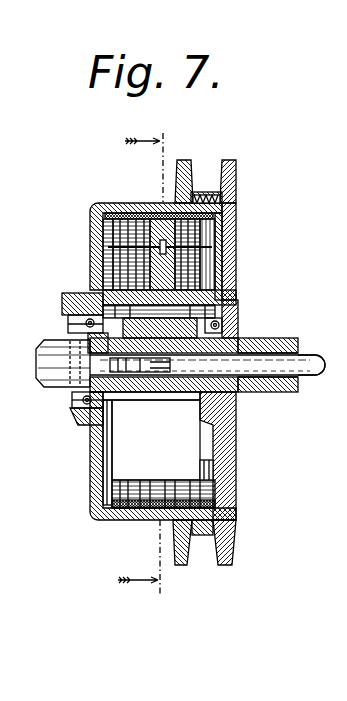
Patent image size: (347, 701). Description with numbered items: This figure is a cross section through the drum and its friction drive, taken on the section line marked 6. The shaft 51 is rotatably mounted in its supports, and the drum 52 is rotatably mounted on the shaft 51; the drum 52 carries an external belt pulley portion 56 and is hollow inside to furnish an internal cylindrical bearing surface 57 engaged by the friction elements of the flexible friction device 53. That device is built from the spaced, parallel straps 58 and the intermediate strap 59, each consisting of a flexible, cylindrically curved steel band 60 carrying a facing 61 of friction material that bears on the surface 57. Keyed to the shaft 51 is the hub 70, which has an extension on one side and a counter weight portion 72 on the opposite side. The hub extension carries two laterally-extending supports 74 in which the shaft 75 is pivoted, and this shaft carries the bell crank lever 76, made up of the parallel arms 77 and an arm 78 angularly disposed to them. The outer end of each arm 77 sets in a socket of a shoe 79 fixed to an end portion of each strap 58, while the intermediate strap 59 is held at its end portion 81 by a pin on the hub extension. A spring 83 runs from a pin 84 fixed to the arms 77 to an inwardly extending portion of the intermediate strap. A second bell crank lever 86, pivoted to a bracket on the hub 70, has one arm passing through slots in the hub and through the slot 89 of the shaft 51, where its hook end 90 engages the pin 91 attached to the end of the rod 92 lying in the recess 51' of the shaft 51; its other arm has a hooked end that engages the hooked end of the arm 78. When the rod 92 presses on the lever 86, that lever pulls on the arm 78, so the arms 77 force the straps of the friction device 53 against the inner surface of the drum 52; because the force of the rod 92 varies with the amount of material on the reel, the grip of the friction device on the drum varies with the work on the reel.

The section line 6- 6 is at (143, 367).
The shaft 51 is at (175, 381).
The recess 51' is at (292, 349).
The drum 52 is at (107, 523).
The flexible friction device 53 is at (152, 553).
The belt pulley portion 56 is at (201, 192).
The internal cylindrical bearing surface 57 is at (158, 212).
The straps 58 is at (140, 470).
The intermediate strap 59 is at (232, 472).
The steel bands 60 is at (103, 507).
The facings 61 is at (120, 212).
The hub 70 is at (232, 435).
The counter weight portion 72 is at (98, 475).
The laterally-extending supports 74 is at (107, 272).
The shaft 75 is at (232, 276).
The bell crank lever 76 is at (85, 287).
The parallel arms 77 is at (92, 240).
The arm 78 is at (238, 310).
The shoe 79 is at (95, 216).
The end portion 81 is at (45, 362).
The spring 83 is at (150, 212).
The pin 84 is at (242, 232).
The bell crank lever 86 is at (67, 335).
The slot 89 is at (88, 426).
The hook end 90 is at (151, 412).
The pin 91 is at (102, 443).
The rod 92 is at (317, 375).